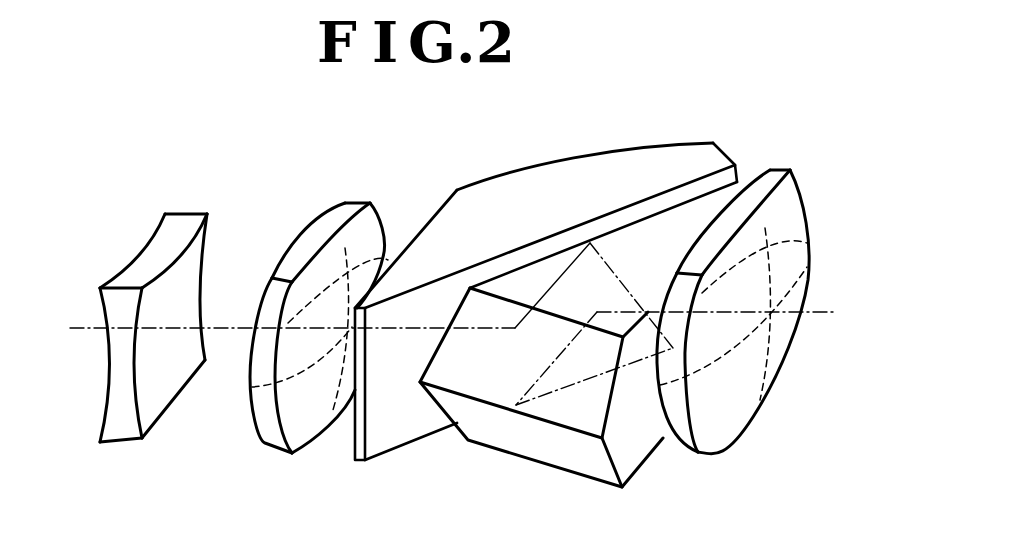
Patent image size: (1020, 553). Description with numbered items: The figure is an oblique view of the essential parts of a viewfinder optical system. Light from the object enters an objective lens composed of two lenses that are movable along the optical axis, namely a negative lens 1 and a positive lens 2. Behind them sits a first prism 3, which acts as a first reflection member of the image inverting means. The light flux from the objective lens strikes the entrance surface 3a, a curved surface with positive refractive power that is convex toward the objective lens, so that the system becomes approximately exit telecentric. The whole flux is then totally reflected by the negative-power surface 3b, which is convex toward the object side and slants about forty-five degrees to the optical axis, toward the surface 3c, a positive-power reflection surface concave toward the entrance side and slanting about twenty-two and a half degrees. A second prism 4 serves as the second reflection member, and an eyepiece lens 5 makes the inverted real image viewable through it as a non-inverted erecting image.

The negative lens 1 is at (178, 222).
The positive lens 2 is at (350, 210).
The first prism 3 is at (387, 461).
The entrance surface 3a is at (417, 230).
The negative-power surface 3b is at (430, 419).
The positive-power reflection surface 3c is at (600, 143).
The second prism 4 is at (655, 448).
The eyepiece lens 5 is at (802, 187).